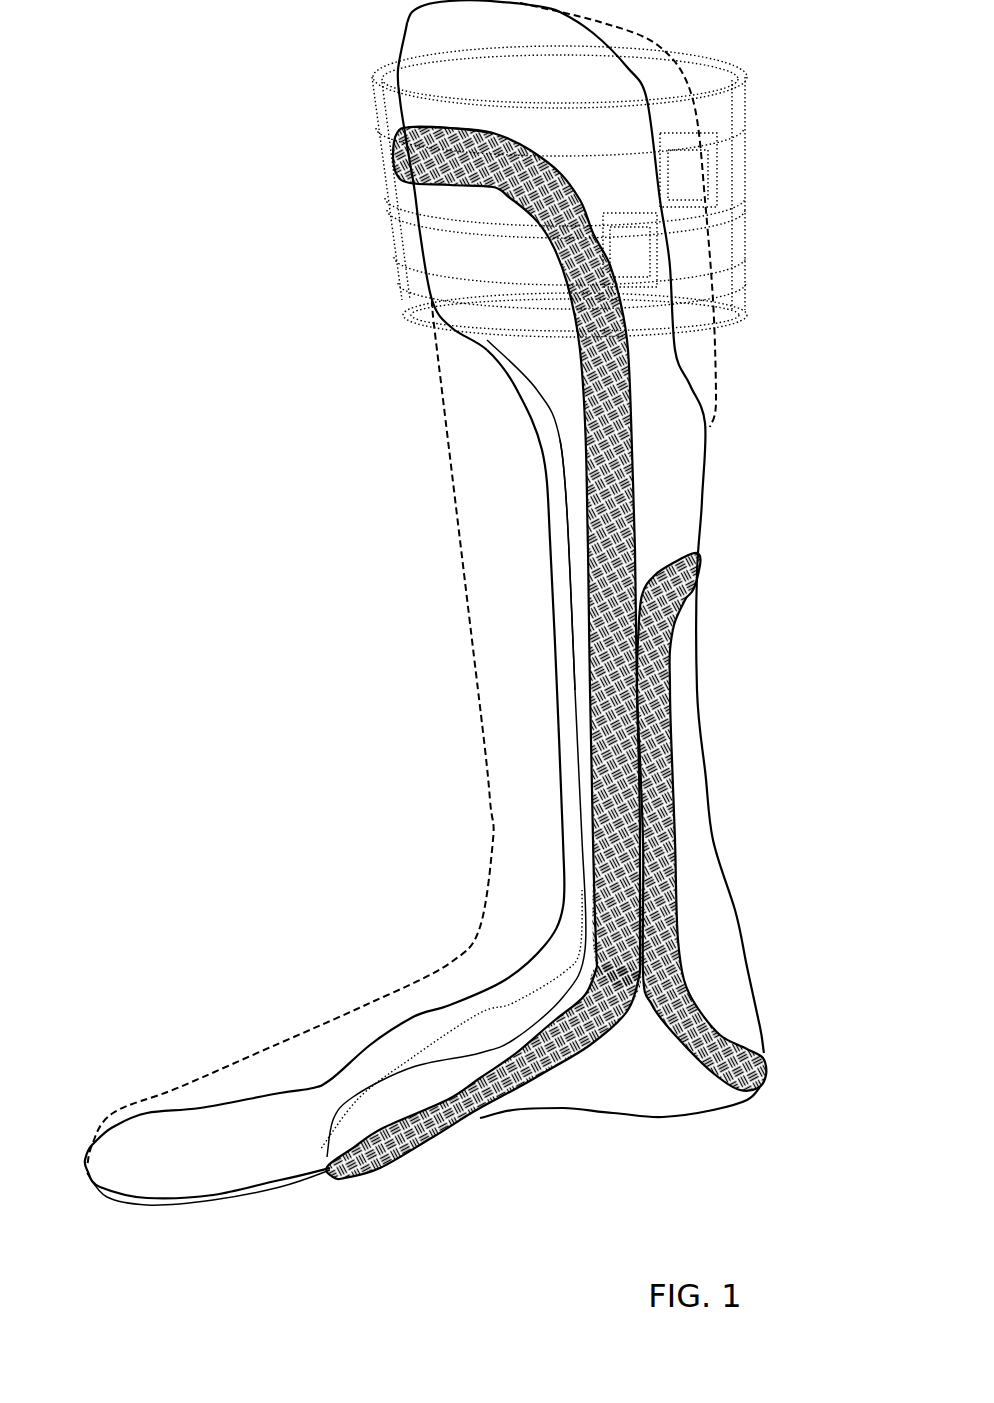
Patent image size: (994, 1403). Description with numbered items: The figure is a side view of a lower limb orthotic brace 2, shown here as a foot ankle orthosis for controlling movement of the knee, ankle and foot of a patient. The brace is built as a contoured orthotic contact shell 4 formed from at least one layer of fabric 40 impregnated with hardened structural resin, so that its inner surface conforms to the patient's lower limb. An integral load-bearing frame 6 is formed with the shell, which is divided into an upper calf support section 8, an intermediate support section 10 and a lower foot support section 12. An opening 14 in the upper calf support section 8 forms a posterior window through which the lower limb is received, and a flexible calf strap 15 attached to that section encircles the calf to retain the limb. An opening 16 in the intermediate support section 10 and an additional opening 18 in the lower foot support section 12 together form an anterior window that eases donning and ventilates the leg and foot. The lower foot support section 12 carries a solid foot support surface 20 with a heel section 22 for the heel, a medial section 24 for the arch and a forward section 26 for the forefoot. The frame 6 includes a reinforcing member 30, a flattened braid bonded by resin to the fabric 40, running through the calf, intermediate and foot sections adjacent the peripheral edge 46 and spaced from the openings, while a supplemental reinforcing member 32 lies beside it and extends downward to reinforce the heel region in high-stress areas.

The lower limb orthotic brace 2 is at (167, 127).
The contoured orthotic contact shell 4 is at (422, 285).
The integral load-bearing frame 6 is at (572, 400).
The upper calf support section 8 is at (663, 430).
The intermediate support section 10 is at (585, 632).
The lower foot support section 12 is at (240, 1127).
The opening 14 is at (690, 243).
The flexible calf strap 15 is at (722, 62).
The opening 16 is at (560, 555).
The additional opening 18 is at (452, 1023).
The solid foot support surface 20 is at (375, 1030).
The heel section 22 is at (677, 1098).
The medial section 24 is at (425, 1097).
The forward section 26 is at (150, 1183).
The reinforcing member 30 is at (640, 530).
The supplemental reinforcing member 32 is at (707, 573).
The fabric 40 is at (412, 22).
The peripheral edge 46 is at (545, 488).